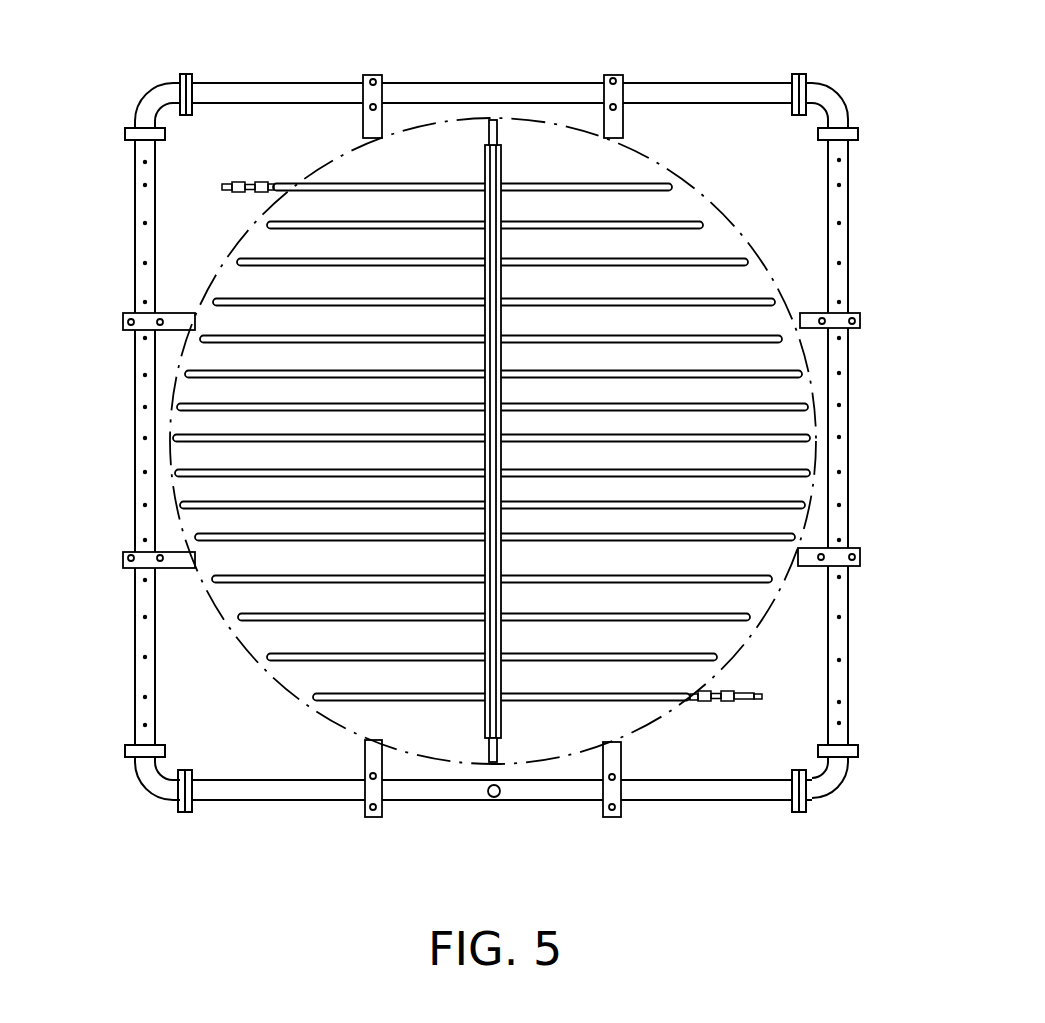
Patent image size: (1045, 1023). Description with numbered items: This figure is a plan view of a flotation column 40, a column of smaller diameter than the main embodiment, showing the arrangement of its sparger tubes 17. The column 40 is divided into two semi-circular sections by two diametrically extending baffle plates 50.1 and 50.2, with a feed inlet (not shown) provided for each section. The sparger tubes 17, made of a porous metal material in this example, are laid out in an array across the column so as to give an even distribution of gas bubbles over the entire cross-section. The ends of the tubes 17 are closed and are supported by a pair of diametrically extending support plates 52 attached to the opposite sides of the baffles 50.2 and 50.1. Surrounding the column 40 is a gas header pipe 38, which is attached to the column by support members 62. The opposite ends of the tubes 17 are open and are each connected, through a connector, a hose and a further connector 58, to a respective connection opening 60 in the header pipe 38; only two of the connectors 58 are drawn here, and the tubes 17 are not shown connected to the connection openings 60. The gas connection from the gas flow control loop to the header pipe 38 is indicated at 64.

The sparger tubes 17 is at (683, 222).
The gas header pipe 38 is at (645, 790).
The two baffle plate column 40 is at (343, 728).
The baffle plate 50.1 is at (488, 753).
The baffle plate 50.2 is at (495, 143).
The support plates 52 is at (485, 455).
The connector 58 is at (240, 184).
The connection opening 60 is at (145, 185).
The support members 62 is at (372, 74).
The gas connection 64 is at (498, 796).